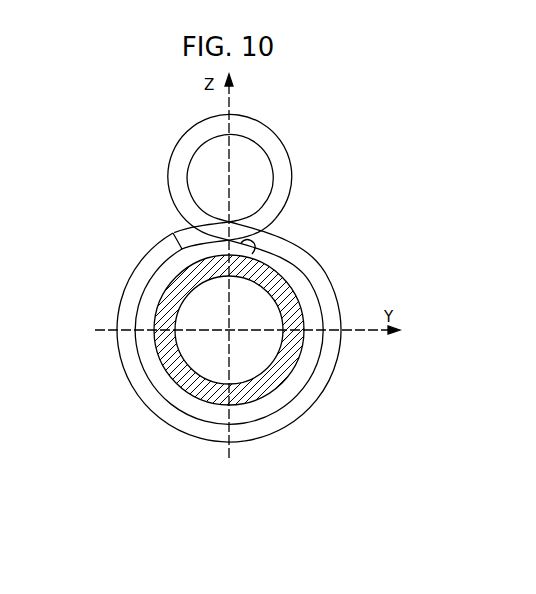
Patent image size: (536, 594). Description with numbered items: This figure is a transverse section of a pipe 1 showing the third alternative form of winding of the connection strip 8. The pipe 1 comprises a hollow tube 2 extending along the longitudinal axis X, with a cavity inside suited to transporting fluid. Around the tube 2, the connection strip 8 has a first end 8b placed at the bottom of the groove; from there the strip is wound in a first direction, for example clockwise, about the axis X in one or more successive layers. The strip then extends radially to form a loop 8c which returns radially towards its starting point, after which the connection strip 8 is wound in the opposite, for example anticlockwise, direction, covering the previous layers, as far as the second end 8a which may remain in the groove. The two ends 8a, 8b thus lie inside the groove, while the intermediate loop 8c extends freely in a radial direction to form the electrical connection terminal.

The pipe 1 is at (146, 431).
The hollow tube 2 is at (277, 380).
The connection strip 8 is at (302, 287).
The second end of the connection strip 8a is at (172, 232).
The first end of the connection strip 8b is at (256, 247).
The loop 8c is at (297, 158).